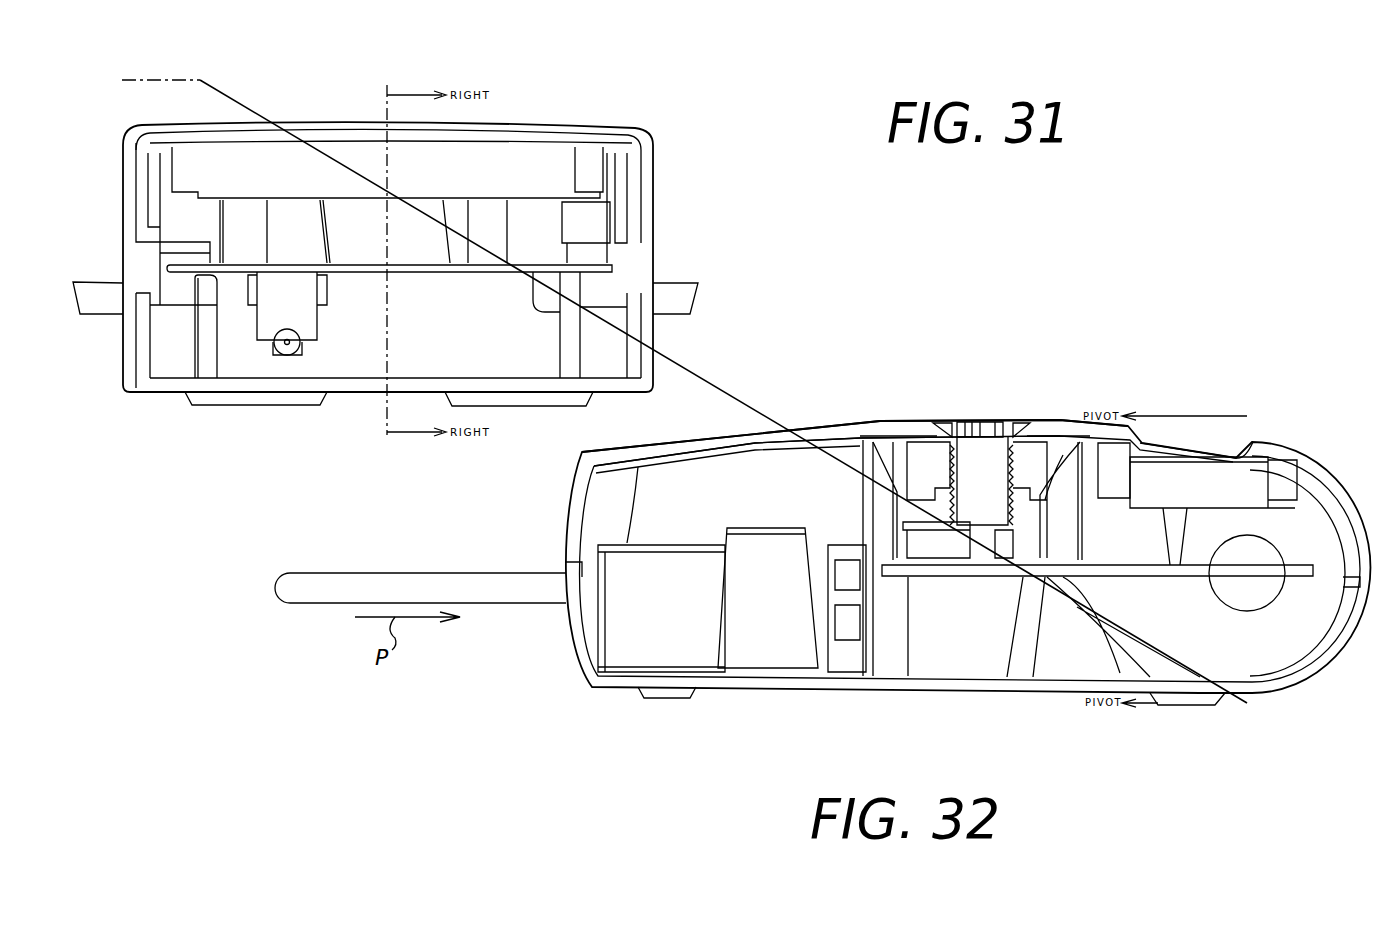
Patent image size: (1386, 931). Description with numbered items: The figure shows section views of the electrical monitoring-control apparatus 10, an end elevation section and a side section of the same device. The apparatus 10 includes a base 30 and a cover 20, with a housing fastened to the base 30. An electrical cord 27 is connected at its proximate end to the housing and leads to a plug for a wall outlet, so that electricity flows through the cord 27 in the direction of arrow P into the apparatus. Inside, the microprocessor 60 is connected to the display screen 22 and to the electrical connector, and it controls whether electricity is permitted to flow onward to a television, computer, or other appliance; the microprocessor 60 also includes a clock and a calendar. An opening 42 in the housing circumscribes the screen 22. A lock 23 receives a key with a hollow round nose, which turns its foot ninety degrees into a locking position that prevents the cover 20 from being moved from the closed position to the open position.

In FIG. 31, the electrical monitoring-control apparatus 10 is at (315, 95).
In FIG. 32, the electrical monitoring-control apparatus 10 is at (842, 700).
In FIG. 32, the cover 20 is at (875, 418).
In FIG. 32, the display screen 22 is at (1207, 462).
In FIG. 32, the lock 23 is at (990, 414).
In FIG. 32, the electrical cord 27 is at (433, 582).
In FIG. 32, the base 30 is at (1298, 692).
In FIG. 32, the opening 42 is at (1233, 452).
In FIG. 32, the microprocessor 60 is at (626, 657).